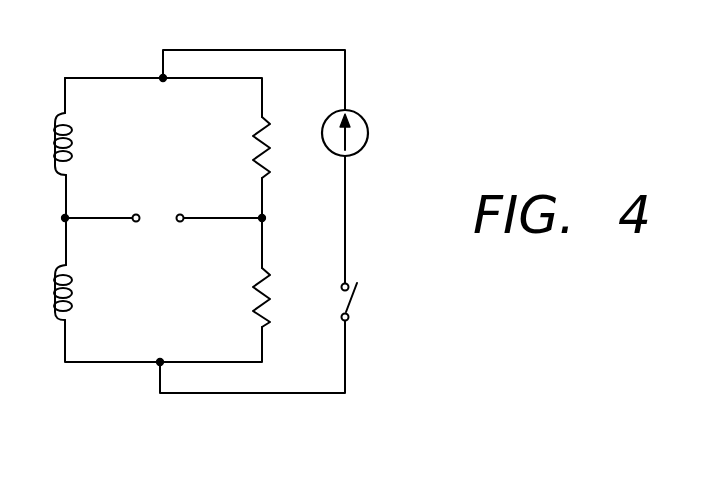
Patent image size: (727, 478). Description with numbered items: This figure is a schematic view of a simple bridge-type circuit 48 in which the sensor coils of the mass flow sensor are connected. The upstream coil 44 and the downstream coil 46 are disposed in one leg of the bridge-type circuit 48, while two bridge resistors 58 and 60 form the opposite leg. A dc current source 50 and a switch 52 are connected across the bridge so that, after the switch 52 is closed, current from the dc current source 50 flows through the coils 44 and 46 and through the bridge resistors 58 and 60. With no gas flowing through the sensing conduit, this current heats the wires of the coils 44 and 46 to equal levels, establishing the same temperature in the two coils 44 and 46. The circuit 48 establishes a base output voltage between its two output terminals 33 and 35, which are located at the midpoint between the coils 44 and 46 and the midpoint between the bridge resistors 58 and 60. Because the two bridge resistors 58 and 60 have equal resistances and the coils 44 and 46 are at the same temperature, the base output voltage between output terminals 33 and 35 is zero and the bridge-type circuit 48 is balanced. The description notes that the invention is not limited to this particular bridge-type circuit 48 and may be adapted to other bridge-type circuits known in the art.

The output terminal 33 is at (137, 214).
The output terminal 35 is at (181, 222).
The upstream coil 44 is at (73, 160).
The downstream coil 46 is at (73, 295).
The bridge-type circuit 48 is at (396, 371).
The dc current source 50 is at (362, 117).
The switch 52 is at (349, 303).
The bridge resistor 58 is at (256, 130).
The bridge resistor 60 is at (256, 305).